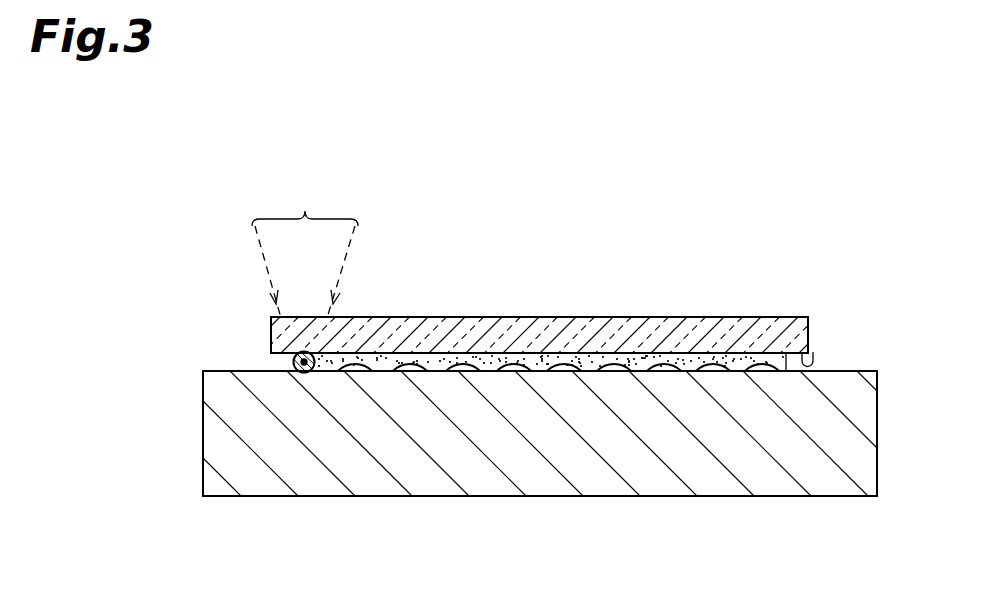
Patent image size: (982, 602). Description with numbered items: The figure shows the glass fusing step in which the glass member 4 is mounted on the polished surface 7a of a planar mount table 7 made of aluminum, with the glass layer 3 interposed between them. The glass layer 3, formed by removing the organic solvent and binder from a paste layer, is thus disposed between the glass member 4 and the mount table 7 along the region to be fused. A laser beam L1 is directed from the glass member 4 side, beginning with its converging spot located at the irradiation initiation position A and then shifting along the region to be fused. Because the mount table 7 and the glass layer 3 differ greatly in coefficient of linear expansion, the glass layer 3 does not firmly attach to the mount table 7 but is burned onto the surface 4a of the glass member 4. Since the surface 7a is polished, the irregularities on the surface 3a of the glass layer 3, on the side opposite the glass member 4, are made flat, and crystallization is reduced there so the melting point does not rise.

The glass layer 3 is at (548, 358).
The surface of glass layer 3a is at (420, 373).
The glass member 4 is at (762, 330).
The surface of glass member 4a is at (815, 358).
The mount table 7 is at (828, 487).
The surface of mount table 7a is at (862, 372).
The irradiation initiation position A is at (307, 372).
The laser beam L1 is at (305, 248).